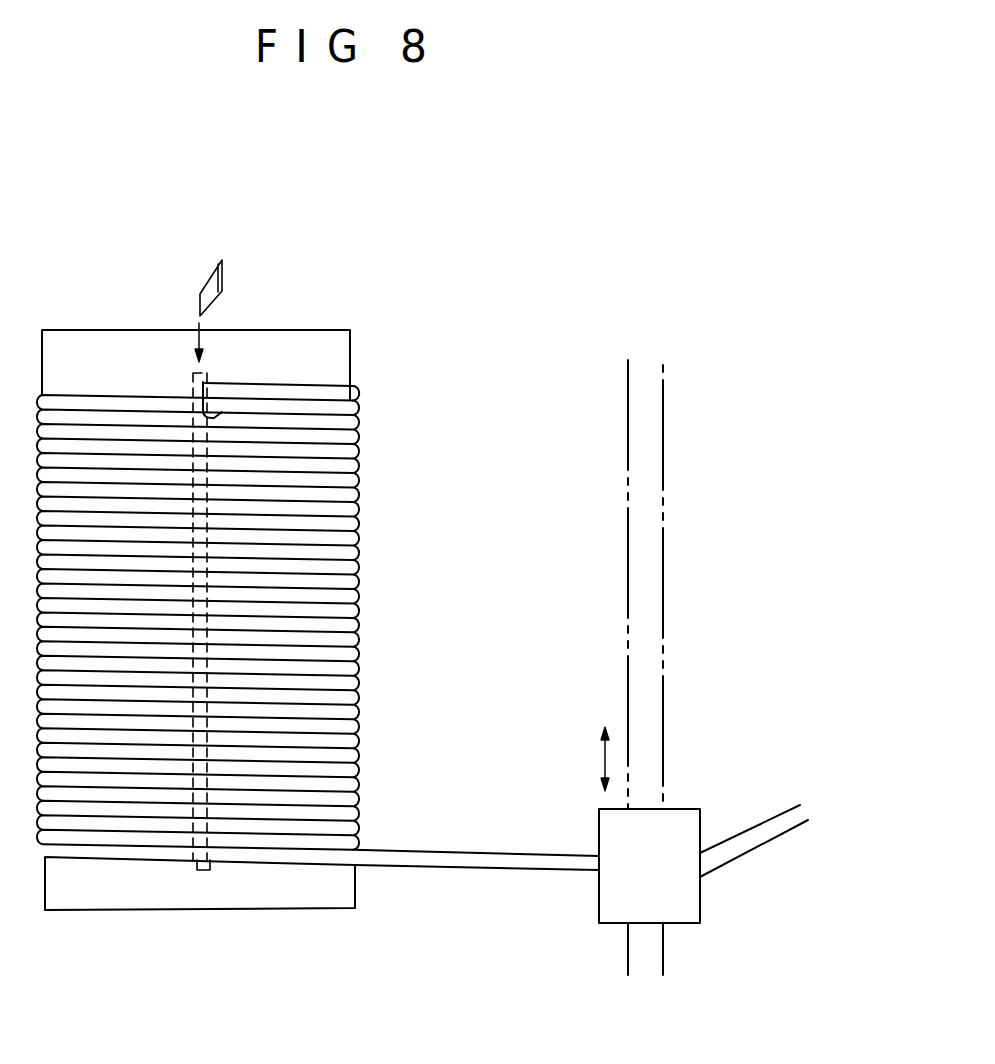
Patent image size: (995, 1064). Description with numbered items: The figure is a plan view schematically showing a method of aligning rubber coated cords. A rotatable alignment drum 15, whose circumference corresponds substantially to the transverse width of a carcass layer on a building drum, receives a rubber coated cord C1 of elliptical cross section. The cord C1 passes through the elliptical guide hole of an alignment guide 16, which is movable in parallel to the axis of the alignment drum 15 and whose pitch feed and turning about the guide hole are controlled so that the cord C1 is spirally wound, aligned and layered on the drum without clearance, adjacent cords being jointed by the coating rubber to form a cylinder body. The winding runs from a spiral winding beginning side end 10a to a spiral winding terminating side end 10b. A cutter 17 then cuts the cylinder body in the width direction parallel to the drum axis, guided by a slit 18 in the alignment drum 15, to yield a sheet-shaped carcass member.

The alignment drum 15 is at (335, 345).
The spiral winding beginning side end 10a is at (297, 392).
The slit 18 is at (205, 418).
The cutter 17 is at (211, 288).
The spiral winding terminating side end 10b is at (172, 855).
The rubber coated cord C1 is at (514, 866).
The alignment guide 16 is at (678, 823).